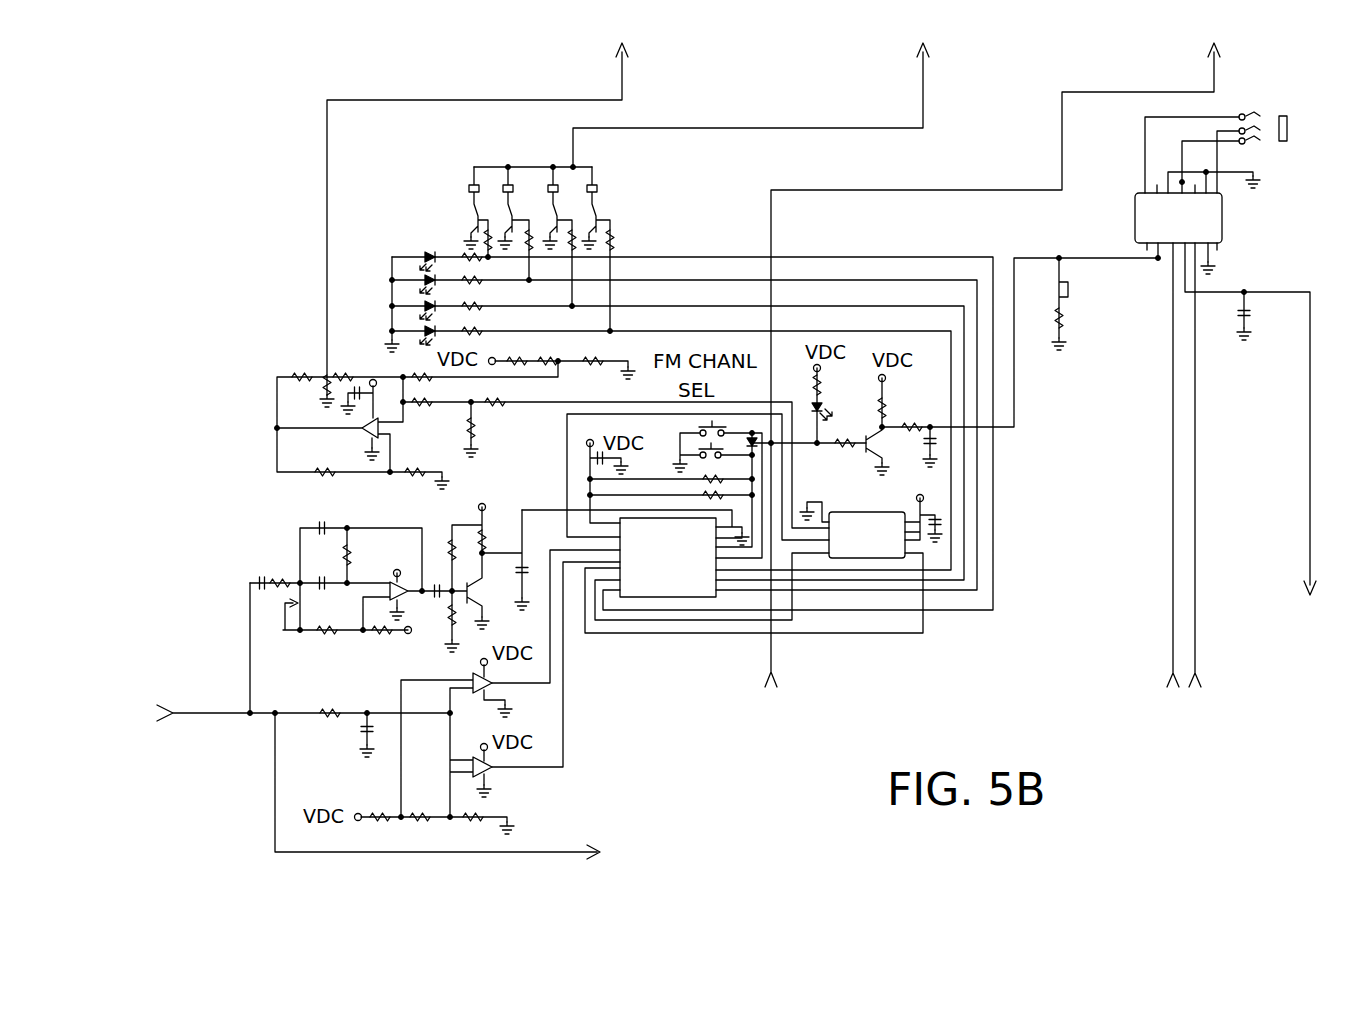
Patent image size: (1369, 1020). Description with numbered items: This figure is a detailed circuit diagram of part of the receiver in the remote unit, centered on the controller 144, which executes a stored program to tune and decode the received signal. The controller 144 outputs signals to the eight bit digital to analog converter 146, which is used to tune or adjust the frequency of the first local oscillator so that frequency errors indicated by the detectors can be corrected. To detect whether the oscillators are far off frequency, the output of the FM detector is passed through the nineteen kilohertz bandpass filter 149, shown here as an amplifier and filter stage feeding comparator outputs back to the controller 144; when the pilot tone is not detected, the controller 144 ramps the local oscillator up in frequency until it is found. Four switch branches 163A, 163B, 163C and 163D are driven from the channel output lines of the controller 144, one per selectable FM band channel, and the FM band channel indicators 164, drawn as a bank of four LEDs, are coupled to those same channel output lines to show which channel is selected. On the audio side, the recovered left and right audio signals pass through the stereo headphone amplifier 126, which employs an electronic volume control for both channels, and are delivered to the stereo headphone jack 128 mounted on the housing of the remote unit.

The channel select switch 163A is at (471, 184).
The channel select switch 163B is at (505, 185).
The channel select switch 163C is at (551, 185).
The channel select switch 163D is at (600, 186).
The FM band channel indicators 164 is at (380, 295).
The 19 KHz bandpass filter 149 is at (293, 545).
The controller 144 is at (672, 597).
The digital to analog converter 146 is at (880, 558).
The stereo headphone amplifier 126 is at (1222, 238).
The stereo headphone jack 128 is at (1284, 141).